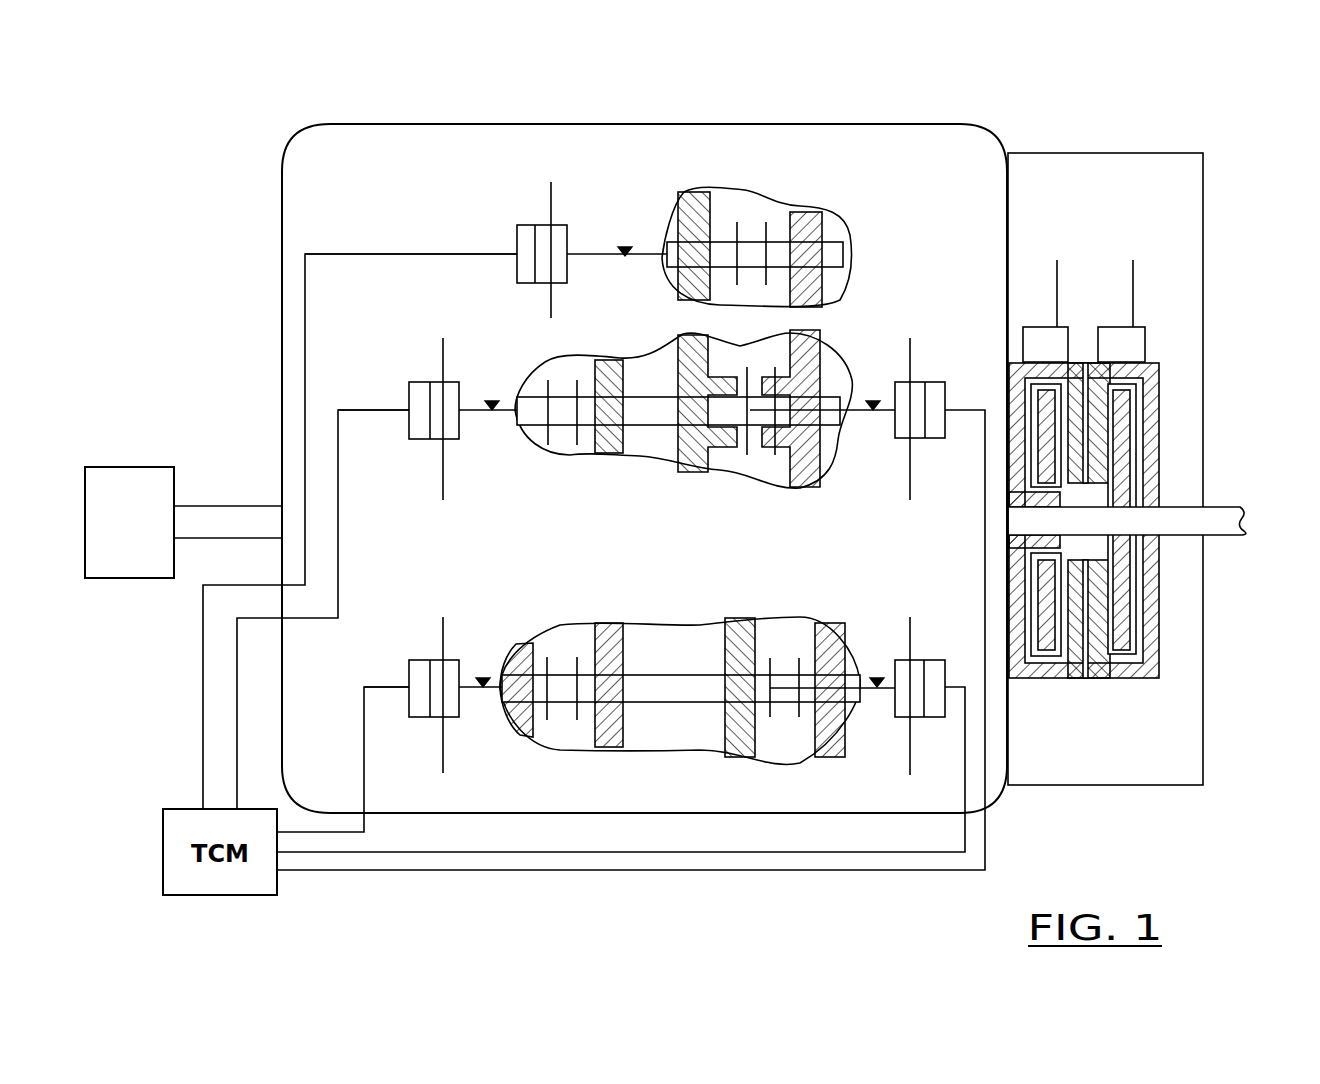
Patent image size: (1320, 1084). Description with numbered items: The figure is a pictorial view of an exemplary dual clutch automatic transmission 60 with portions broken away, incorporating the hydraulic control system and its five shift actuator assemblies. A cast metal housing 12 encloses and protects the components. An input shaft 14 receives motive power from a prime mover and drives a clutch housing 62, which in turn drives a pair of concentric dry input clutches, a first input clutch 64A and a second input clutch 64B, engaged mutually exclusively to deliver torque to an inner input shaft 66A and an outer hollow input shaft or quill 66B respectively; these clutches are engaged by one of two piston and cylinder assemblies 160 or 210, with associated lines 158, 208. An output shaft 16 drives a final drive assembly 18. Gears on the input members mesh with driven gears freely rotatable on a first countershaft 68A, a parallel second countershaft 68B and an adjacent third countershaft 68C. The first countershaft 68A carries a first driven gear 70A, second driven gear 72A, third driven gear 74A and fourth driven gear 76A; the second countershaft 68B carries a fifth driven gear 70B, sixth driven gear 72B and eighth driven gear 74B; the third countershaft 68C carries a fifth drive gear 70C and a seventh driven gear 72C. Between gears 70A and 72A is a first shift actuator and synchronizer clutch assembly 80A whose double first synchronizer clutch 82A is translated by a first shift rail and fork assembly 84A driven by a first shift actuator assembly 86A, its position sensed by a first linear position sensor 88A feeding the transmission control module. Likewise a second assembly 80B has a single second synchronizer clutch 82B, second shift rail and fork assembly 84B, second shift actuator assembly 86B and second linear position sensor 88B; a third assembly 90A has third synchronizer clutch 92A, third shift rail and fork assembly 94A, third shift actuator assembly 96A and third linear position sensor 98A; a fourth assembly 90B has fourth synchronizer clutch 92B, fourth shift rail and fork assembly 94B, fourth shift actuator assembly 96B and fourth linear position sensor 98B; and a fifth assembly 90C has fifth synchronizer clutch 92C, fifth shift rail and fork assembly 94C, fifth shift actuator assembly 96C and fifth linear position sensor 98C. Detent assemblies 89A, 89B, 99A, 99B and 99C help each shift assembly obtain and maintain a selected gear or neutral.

The housing 12 is at (978, 125).
The dual clutch transmission 60 is at (1232, 152).
The final drive assembly 18 is at (110, 467).
The output shaft 16 is at (198, 506).
The input shaft 14 is at (1215, 514).
The fifth shift actuator and synchronizer clutch assembly 90C is at (892, 190).
The fifth linear position sensor 98C is at (528, 240).
The fifth shift actuator assembly 96C is at (560, 240).
The fifth shift rail and fork assembly 94C is at (600, 257).
The fifth detent assembly 99C is at (626, 246).
The third countershaft 68C is at (835, 255).
The seventh driven gear 72C is at (690, 210).
The fifth drive gear 70C is at (812, 220).
The fifth synchronizer clutch 92C is at (752, 262).
The fourth shift actuator and synchronizer clutch assembly 90B is at (468, 302).
The second shift actuator and synchronizer clutch assembly 80B is at (840, 325).
The fourth linear position sensor 98B is at (418, 400).
The fourth shift actuator assembly 96B is at (438, 432).
The fourth shift rail and fork assembly 94B is at (472, 413).
The fourth detent assembly 99B is at (494, 400).
The second countershaft 68B is at (650, 425).
The fourth synchronizer clutch 92B is at (560, 410).
The eighth driven gear 74B is at (605, 442).
The sixth driven gear 72B is at (695, 458).
The fifth driven gear 70B is at (805, 476).
The second synchronizer clutch 82B is at (768, 420).
The second shift rail and fork assembly 84B is at (885, 415).
The second detent assembly 89B is at (873, 400).
The second shift actuator assembly 86B is at (918, 400).
The second linear position sensor 88B is at (935, 435).
The third shift actuator and synchronizer clutch assembly 90A is at (468, 577).
The first shift actuator and synchronizer clutch assembly 80A is at (840, 585).
The third linear position sensor 98A is at (408, 678).
The third shift actuator assembly 96A is at (440, 710).
The third shift rail and fork assembly 94A is at (465, 690).
The third detent assembly 99A is at (486, 677).
The first countershaft 68A is at (652, 690).
The fourth driven gear 76A is at (522, 735).
The third synchronizer clutch 92A is at (555, 687).
The third driven gear 74A is at (608, 738).
The second driven gear 72A is at (738, 740).
The first driven gear 70A is at (835, 735).
The first synchronizer clutch 82A is at (785, 690).
The first shift rail and fork assembly 84A is at (802, 680).
The first detent assembly 89A is at (877, 676).
The first shift actuator assembly 86A is at (918, 675).
The first linear position sensor 88A is at (932, 710).
The control line 208 is at (1060, 290).
The control line 158 is at (1137, 290).
The piston and cylinder assembly 210 is at (1040, 340).
The piston and cylinder assembly 160 is at (1135, 345).
The clutch housing 62 is at (1160, 415).
The first input clutch 64A is at (1125, 458).
The second input clutch 64B is at (1105, 655).
The inner input shaft 66A is at (1150, 540).
The outer hollow input shaft 66B is at (1030, 650).